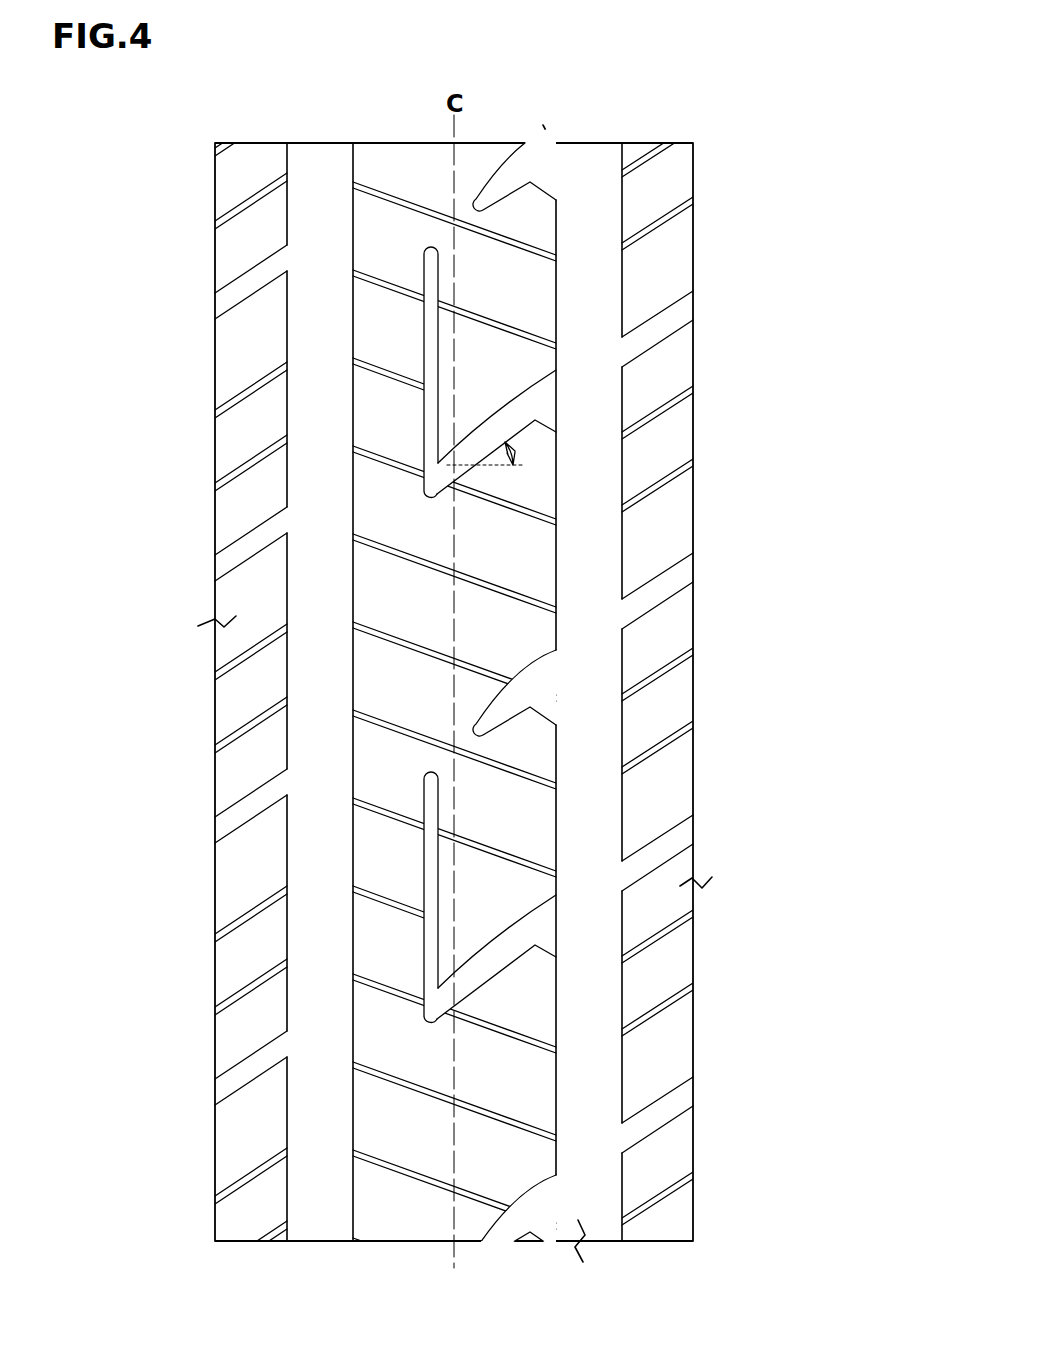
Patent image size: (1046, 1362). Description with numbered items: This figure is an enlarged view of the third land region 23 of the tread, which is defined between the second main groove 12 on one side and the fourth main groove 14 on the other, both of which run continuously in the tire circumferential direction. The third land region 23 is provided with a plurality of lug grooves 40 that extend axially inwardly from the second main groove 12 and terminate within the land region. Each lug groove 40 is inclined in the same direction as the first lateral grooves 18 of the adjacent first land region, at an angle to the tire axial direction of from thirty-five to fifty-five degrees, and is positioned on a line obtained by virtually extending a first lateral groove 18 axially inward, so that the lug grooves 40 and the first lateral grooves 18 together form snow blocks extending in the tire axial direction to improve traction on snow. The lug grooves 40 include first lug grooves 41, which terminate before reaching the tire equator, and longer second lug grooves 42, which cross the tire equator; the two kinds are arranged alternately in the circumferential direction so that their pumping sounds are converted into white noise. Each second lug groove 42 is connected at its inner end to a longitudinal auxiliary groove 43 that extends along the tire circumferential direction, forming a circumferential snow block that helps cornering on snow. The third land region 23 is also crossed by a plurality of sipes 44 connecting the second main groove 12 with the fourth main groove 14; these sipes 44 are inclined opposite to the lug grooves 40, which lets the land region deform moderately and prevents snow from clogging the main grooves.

The second main groove 12 is at (594, 201).
The fourth main groove 14 is at (326, 187).
The first lateral grooves 18 is at (656, 336).
The third land region 23 is at (482, 721).
The lug grooves 40 is at (641, 693).
The first lug grooves 41 is at (530, 692).
The second lug grooves 42 is at (519, 936).
The longitudinal auxiliary groove 43 is at (417, 349).
The sipes 44 is at (400, 645).